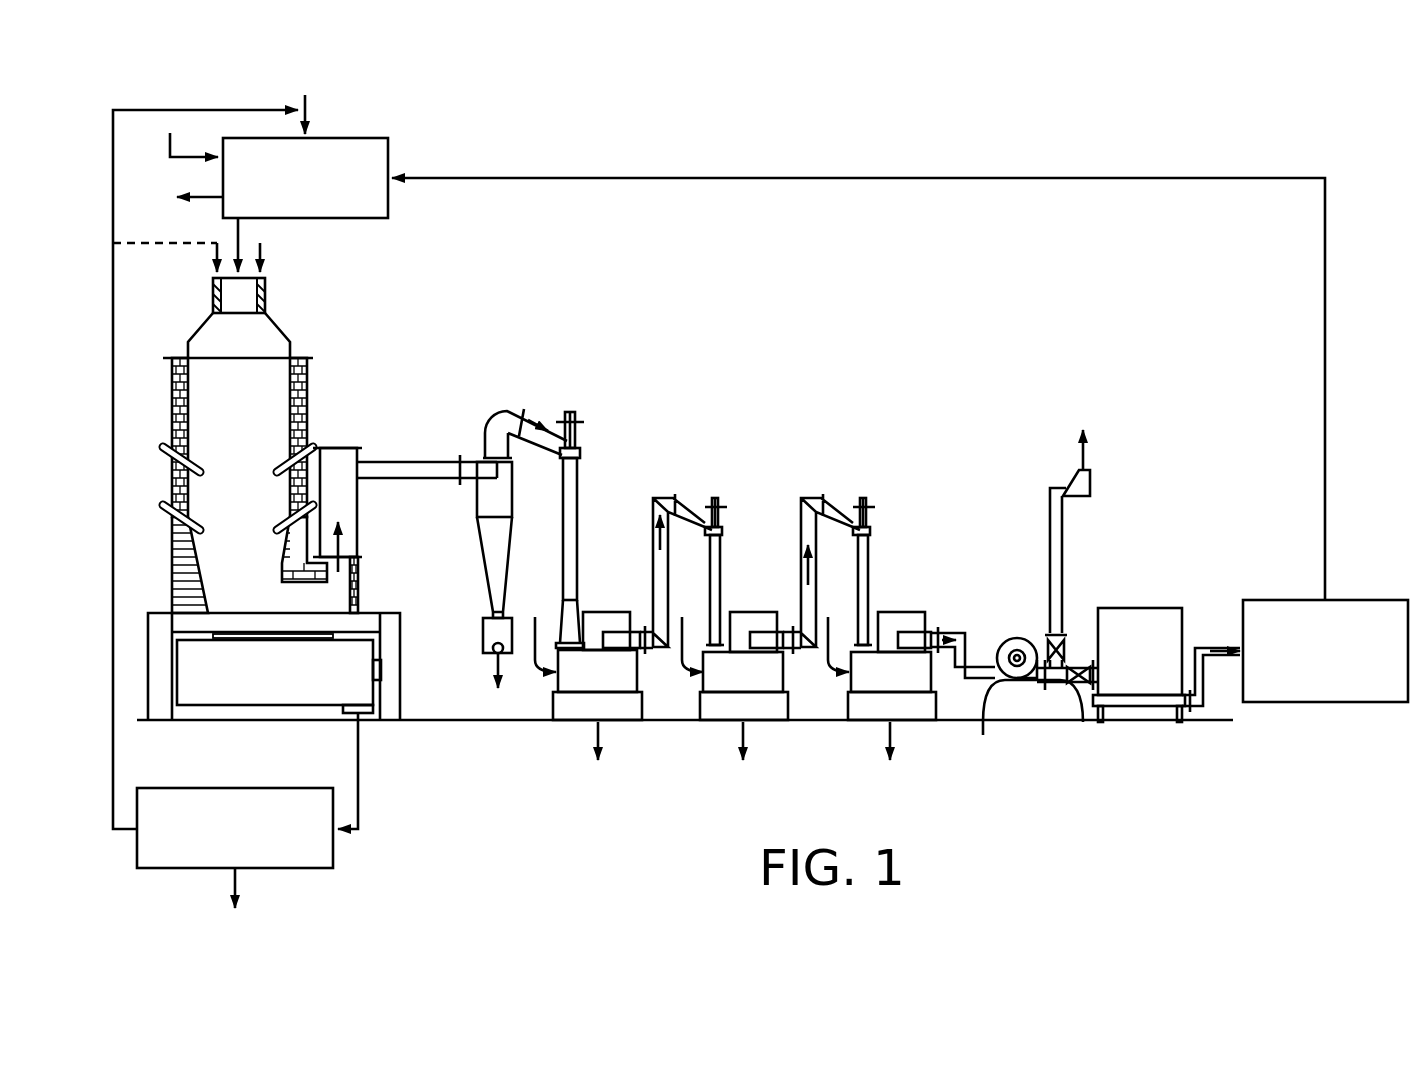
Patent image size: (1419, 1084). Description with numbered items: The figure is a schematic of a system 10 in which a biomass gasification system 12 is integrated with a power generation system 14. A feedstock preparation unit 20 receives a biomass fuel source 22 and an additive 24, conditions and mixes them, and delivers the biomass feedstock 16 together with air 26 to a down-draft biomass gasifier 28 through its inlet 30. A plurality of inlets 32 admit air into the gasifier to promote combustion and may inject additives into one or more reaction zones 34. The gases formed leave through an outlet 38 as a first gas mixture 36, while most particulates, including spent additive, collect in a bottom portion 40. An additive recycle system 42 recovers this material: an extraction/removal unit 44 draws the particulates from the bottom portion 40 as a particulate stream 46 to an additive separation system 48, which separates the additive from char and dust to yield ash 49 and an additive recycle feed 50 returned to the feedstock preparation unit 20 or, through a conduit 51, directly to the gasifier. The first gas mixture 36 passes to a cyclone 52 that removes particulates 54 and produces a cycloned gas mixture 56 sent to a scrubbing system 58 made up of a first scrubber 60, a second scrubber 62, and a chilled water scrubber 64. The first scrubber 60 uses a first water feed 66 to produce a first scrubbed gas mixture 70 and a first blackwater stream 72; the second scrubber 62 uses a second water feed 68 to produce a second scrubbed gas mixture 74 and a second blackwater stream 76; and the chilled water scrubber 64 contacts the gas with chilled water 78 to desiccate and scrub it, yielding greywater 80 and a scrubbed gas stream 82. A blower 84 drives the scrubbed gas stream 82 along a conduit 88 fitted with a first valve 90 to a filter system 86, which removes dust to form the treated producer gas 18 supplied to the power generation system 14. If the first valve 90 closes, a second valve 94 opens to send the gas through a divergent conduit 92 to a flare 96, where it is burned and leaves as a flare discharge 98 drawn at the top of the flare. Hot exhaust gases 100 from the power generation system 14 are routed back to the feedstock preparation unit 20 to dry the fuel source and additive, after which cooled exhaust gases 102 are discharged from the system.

The system 10 is at (1040, 149).
The biomass gasification system 12 is at (690, 306).
The power generation system 14 is at (1327, 702).
The biomass feedstock 16 is at (237, 240).
The treated producer gas 18 is at (1236, 650).
The feedstock preparation unit 20 is at (372, 138).
The biomass fuel source 22 is at (175, 138).
The additive 24 is at (308, 100).
The air 26 is at (262, 252).
The biomass gasifier 28 is at (370, 293).
The inlet 30 is at (266, 300).
The inlets 32 is at (155, 470).
The reaction zones 34 is at (232, 500).
The first gas mixture 36 is at (342, 548).
The outlet 38 is at (422, 460).
The bottom portion 40 is at (218, 596).
The additive recycle system 42 is at (430, 808).
The extraction/removal unit 44 is at (273, 706).
The particulate stream 46 is at (359, 773).
The additive separation system 48 is at (237, 788).
The ash 49 is at (233, 884).
The additive recycle feed 50 is at (115, 747).
The conduit 51 is at (172, 243).
The cyclone 52 is at (483, 563).
The particulates 54 is at (496, 666).
The cycloned gas mixture 56 is at (513, 415).
The scrubbing system 58 is at (754, 457).
The first scrubber 60 is at (610, 468).
The second scrubber 62 is at (784, 488).
The chilled water scrubber 64 is at (890, 498).
The first water feed 66 is at (535, 660).
The second water feed 68 is at (682, 660).
The first scrubbed gas mixture 70 is at (654, 543).
The first blackwater stream 72 is at (600, 737).
The second scrubbed gas mixture 74 is at (803, 572).
The second blackwater stream 76 is at (747, 737).
The chilled water 78 is at (828, 660).
The greywater 80 is at (893, 737).
The scrubbed gas stream 82 is at (913, 630).
The blower 84 is at (1012, 633).
The filter system 86 is at (1140, 608).
The conduit 88 is at (1024, 724).
The first valve 90 is at (1083, 722).
The divergent conduit 92 is at (1063, 542).
The second valve 94 is at (1062, 648).
The flare 96 is at (1090, 482).
The flare exhaust 98 is at (1082, 452).
The exhaust gases 100 is at (1326, 390).
The cooled exhaust gases 102 is at (203, 195).